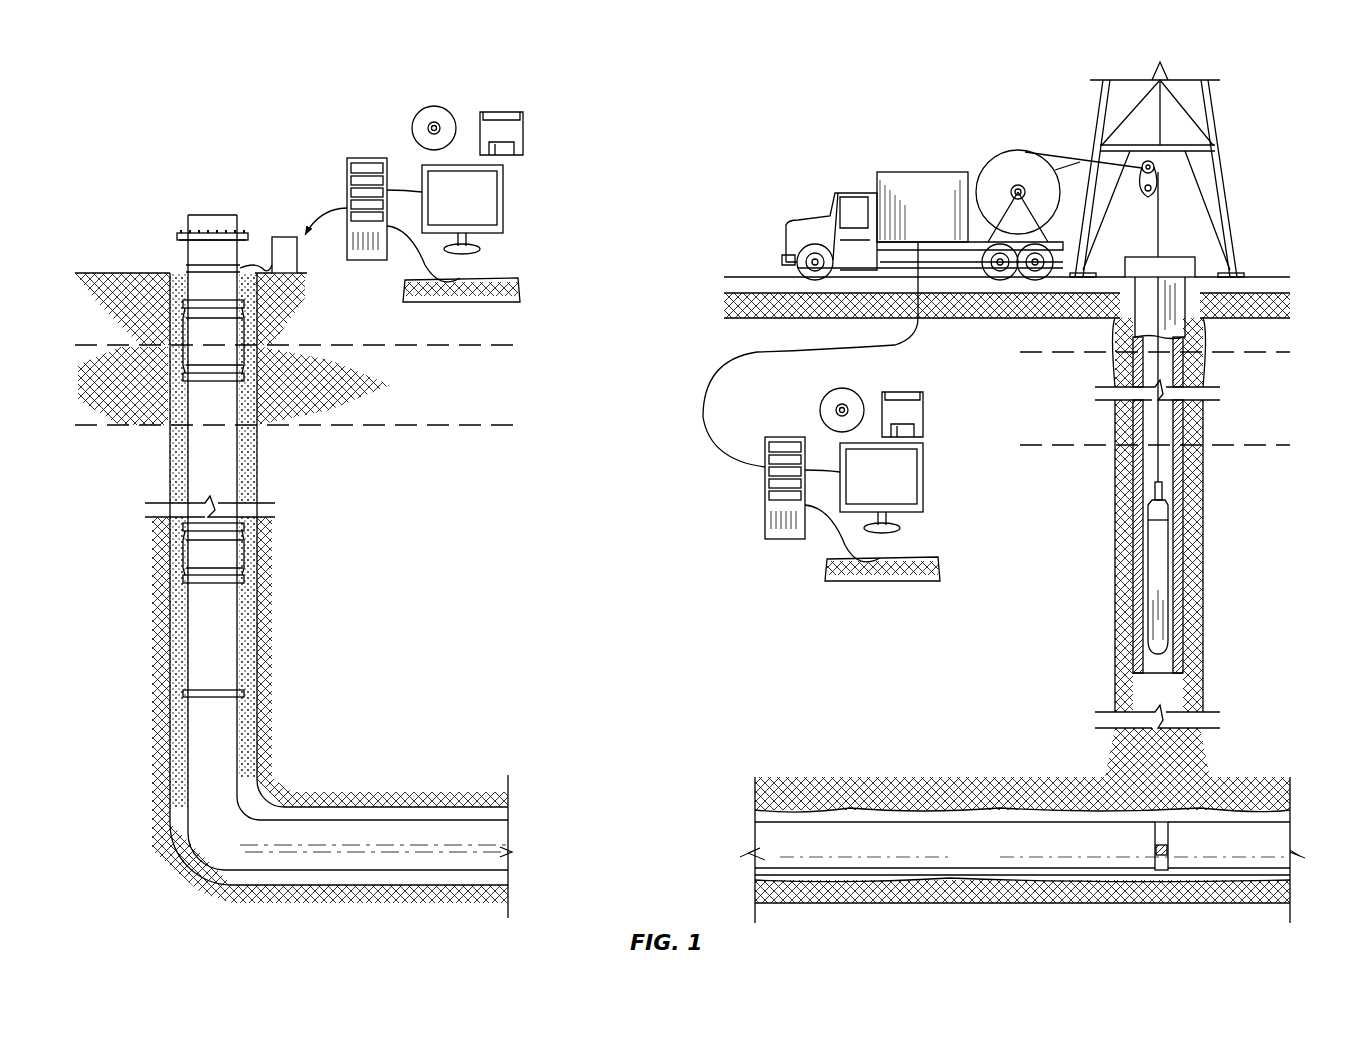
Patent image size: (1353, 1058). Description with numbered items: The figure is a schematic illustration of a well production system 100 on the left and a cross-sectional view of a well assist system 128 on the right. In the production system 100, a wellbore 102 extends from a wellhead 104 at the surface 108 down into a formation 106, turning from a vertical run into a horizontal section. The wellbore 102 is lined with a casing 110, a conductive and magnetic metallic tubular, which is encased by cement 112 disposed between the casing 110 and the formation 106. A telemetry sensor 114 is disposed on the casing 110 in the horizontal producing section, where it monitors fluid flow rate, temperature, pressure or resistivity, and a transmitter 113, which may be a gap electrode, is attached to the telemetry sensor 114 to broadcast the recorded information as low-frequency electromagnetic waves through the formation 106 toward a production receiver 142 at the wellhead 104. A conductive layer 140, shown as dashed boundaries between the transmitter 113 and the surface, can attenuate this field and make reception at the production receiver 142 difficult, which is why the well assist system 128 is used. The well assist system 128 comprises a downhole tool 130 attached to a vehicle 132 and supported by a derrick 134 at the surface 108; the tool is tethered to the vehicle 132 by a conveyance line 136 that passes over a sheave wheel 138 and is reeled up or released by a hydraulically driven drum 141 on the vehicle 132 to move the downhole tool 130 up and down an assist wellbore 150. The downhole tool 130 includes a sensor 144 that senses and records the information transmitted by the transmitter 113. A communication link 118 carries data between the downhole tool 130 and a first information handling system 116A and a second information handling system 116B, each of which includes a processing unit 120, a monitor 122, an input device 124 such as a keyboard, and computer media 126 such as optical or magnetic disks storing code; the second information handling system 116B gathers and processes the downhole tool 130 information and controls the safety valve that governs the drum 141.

The well production system 100 is at (218, 104).
The wellbore 102 is at (178, 268).
The wellhead 104 is at (212, 212).
The formation 106 is at (330, 595).
The surface 108 is at (118, 270).
The casing 110 is at (230, 450).
The cement 112 is at (248, 550).
The transmitter 113 is at (1163, 858).
The telemetry sensor 114 is at (1157, 820).
The first information handling system 116A is at (545, 84).
The second information handling system 116B is at (795, 592).
The communication link 118 is at (322, 206).
The processing unit 120 is at (362, 160).
The monitor 122 is at (505, 195).
The input device 124 is at (520, 290).
The computer media 126 is at (434, 106).
The well assist system 128 is at (824, 118).
The downhole tool 130 is at (1155, 540).
The vehicle 132 is at (890, 172).
The derrick 134 is at (1215, 98).
The conveyance line 136 is at (1156, 460).
The sheave wheel 138 is at (1145, 200).
The conductive layer 140 is at (400, 428).
The drum 141 is at (1015, 150).
The production receiver 142 is at (285, 258).
The sensor 144 is at (1155, 612).
The assist wellbore 150 is at (1170, 472).